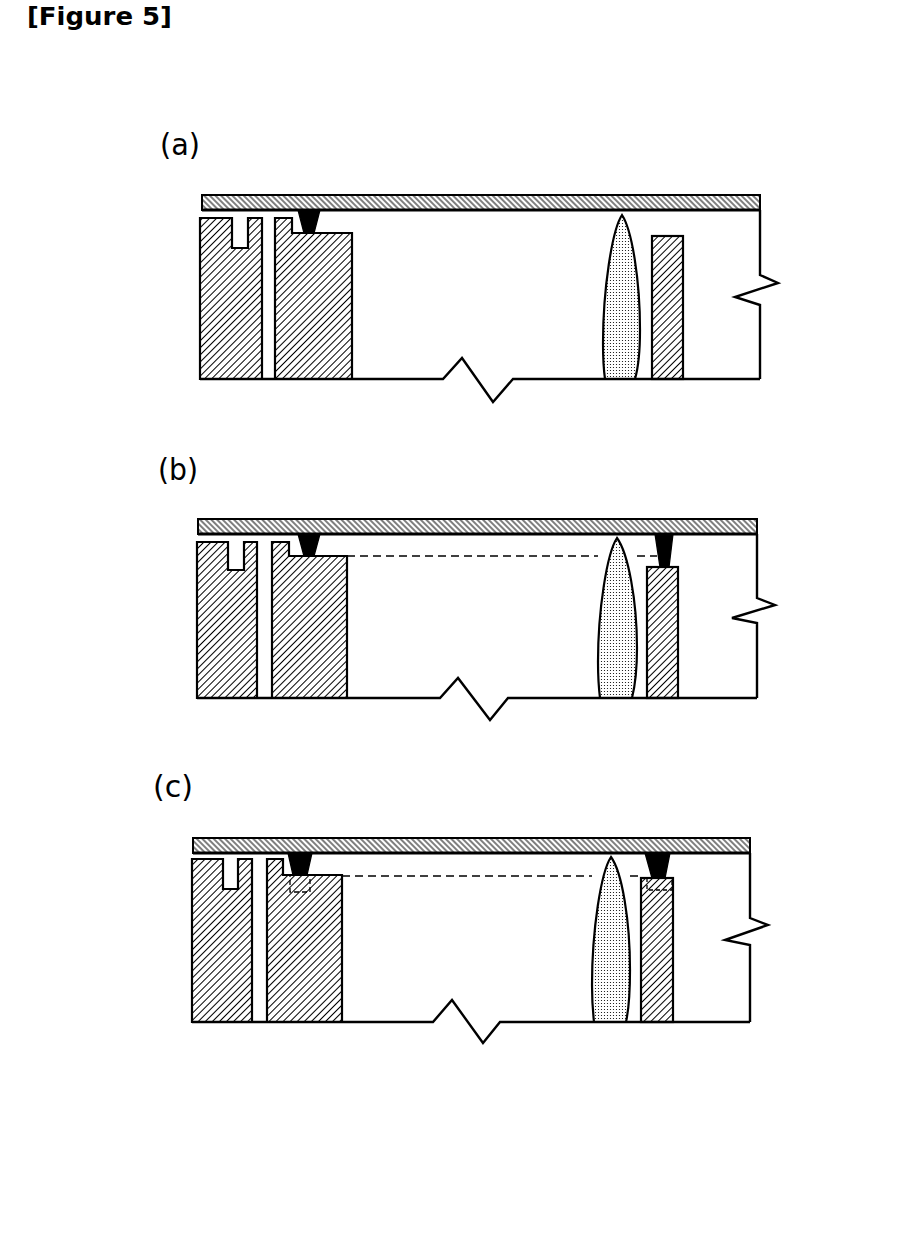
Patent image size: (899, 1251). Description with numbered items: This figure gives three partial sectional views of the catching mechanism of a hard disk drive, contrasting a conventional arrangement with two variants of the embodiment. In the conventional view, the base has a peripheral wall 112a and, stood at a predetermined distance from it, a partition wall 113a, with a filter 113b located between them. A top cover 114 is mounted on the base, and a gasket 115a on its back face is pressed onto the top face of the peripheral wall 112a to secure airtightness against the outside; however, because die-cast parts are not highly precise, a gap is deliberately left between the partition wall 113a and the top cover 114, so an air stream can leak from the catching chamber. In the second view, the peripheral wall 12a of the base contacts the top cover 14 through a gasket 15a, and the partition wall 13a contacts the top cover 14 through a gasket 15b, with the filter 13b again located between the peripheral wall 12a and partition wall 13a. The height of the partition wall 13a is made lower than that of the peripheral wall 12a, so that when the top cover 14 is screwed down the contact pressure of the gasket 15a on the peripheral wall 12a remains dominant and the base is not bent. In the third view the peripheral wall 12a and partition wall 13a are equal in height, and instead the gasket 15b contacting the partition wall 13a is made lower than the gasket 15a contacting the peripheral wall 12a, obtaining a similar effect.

The peripheral wall 112a is at (275, 328).
The partition wall 113a is at (673, 236).
The filter 113b is at (615, 214).
The top cover 114 is at (443, 195).
The gasket 115a is at (317, 228).
The peripheral wall 12a is at (272, 648).
The partition wall 13a is at (680, 590).
The filter 13b is at (598, 558).
The top cover 14 is at (440, 519).
The gasket 15a is at (320, 550).
The gasket 15b is at (665, 519).